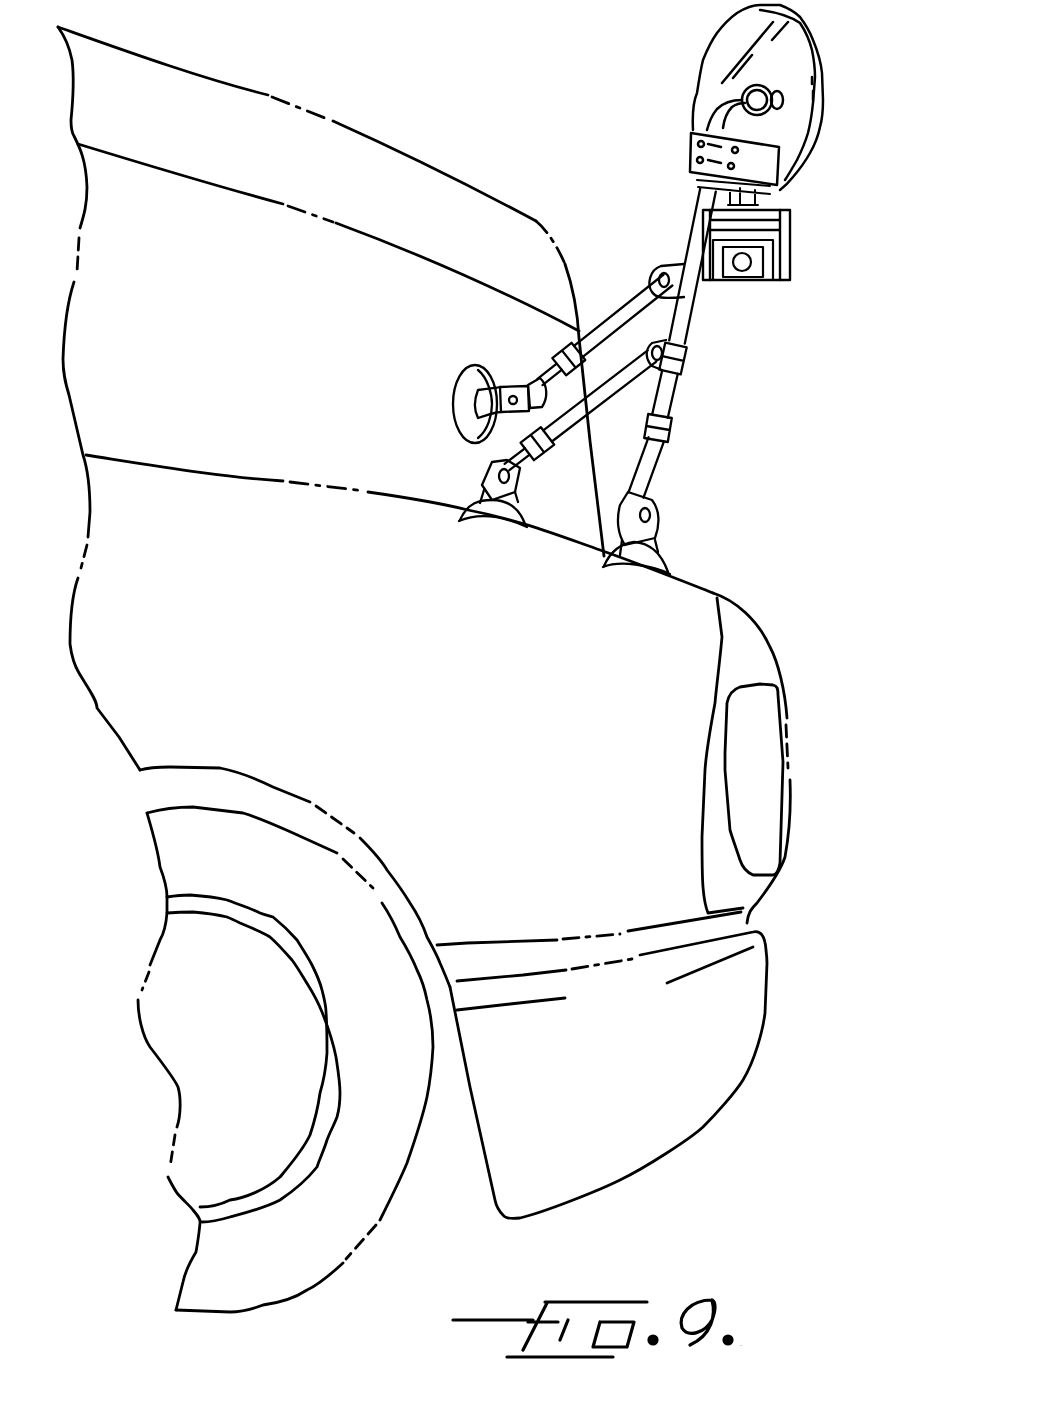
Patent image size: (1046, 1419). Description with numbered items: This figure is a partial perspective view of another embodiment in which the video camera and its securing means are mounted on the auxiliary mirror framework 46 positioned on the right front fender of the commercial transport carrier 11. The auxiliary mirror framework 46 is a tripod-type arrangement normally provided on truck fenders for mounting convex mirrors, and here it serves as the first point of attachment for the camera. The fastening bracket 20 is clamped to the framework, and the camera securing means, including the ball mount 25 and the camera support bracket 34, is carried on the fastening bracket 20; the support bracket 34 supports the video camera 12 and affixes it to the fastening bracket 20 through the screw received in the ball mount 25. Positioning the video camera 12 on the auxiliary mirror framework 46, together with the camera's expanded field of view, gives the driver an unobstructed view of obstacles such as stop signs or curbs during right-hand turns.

The commercial transport carrier 11 is at (361, 141).
The fastening bracket 20 is at (690, 150).
The ball mount 25 is at (733, 190).
The support bracket 34 is at (790, 227).
The video camera 12 is at (763, 283).
The auxiliary mirror framework 46 is at (680, 392).